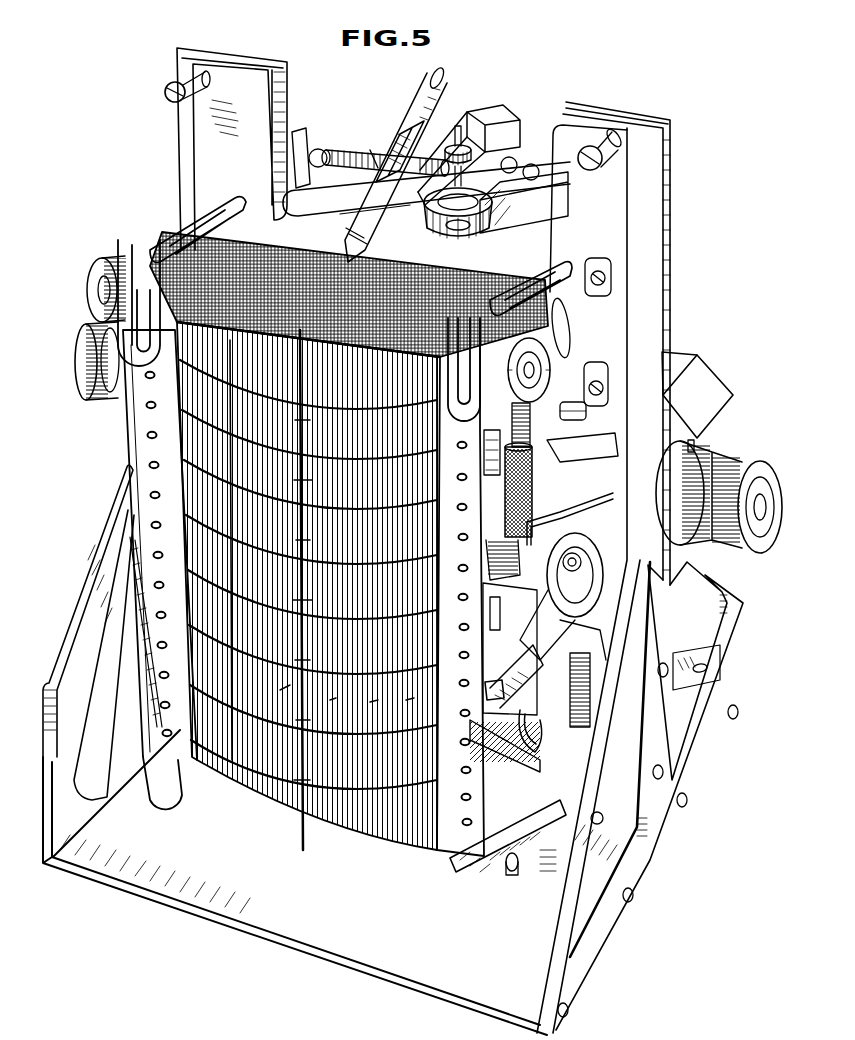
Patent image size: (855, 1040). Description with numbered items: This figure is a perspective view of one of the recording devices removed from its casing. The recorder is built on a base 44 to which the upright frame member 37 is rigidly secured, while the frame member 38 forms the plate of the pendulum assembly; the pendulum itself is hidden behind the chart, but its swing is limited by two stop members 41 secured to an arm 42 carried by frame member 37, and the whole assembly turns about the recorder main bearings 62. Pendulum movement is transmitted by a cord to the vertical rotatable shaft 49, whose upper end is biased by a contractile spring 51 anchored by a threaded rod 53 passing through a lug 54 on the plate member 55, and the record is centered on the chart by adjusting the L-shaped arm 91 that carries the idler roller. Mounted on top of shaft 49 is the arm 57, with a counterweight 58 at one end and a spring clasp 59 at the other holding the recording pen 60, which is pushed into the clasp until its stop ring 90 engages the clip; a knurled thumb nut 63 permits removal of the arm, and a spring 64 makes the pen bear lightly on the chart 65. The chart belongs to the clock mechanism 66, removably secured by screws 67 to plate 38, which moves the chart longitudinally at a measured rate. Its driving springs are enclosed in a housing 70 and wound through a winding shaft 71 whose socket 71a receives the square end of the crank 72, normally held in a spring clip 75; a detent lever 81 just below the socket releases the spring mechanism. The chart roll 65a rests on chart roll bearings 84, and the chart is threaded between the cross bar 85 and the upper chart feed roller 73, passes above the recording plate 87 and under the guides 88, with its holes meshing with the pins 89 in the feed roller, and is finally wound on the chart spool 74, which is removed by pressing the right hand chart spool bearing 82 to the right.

The frame member 37 is at (560, 230).
The frame member 38 is at (192, 50).
The stop member 41 is at (708, 413).
The arm 42 is at (673, 353).
The base 44 is at (257, 933).
The vertical rotatable shaft 49 is at (458, 126).
The contractile spring 51 is at (340, 152).
The threaded rod 53 is at (294, 146).
The lug 54 is at (300, 183).
The plate member 55 is at (335, 196).
The arm 57 is at (495, 152).
The counterweight 58 is at (507, 112).
The spring clasp 59 is at (395, 140).
The recording pen 60 is at (422, 88).
The recorder main bearings 62 is at (92, 345).
The knurled thumb nut 63 is at (450, 147).
The spring 64 is at (430, 218).
The chart 65 is at (147, 415).
The chart roll 65a is at (530, 755).
The clock mechanism 66 is at (127, 444).
The screws 67 is at (167, 92).
The housing 70 is at (492, 525).
The winding shaft 71 is at (485, 670).
The socket 71a is at (485, 697).
The crank 72 is at (588, 513).
The chart feed roller 73 is at (542, 380).
The chart spool 74 is at (488, 853).
The spring clip 75 is at (502, 493).
The detent lever 81 is at (518, 717).
The chart spool bearing 82 is at (512, 877).
The chart roll bearings 84 is at (575, 748).
The cross bar 85 is at (478, 465).
The recording plate 87 is at (160, 247).
The guides 88 is at (170, 233).
The pins 89 is at (148, 263).
The stop ring 90 is at (377, 153).
The L-shaped arm 91 is at (555, 205).